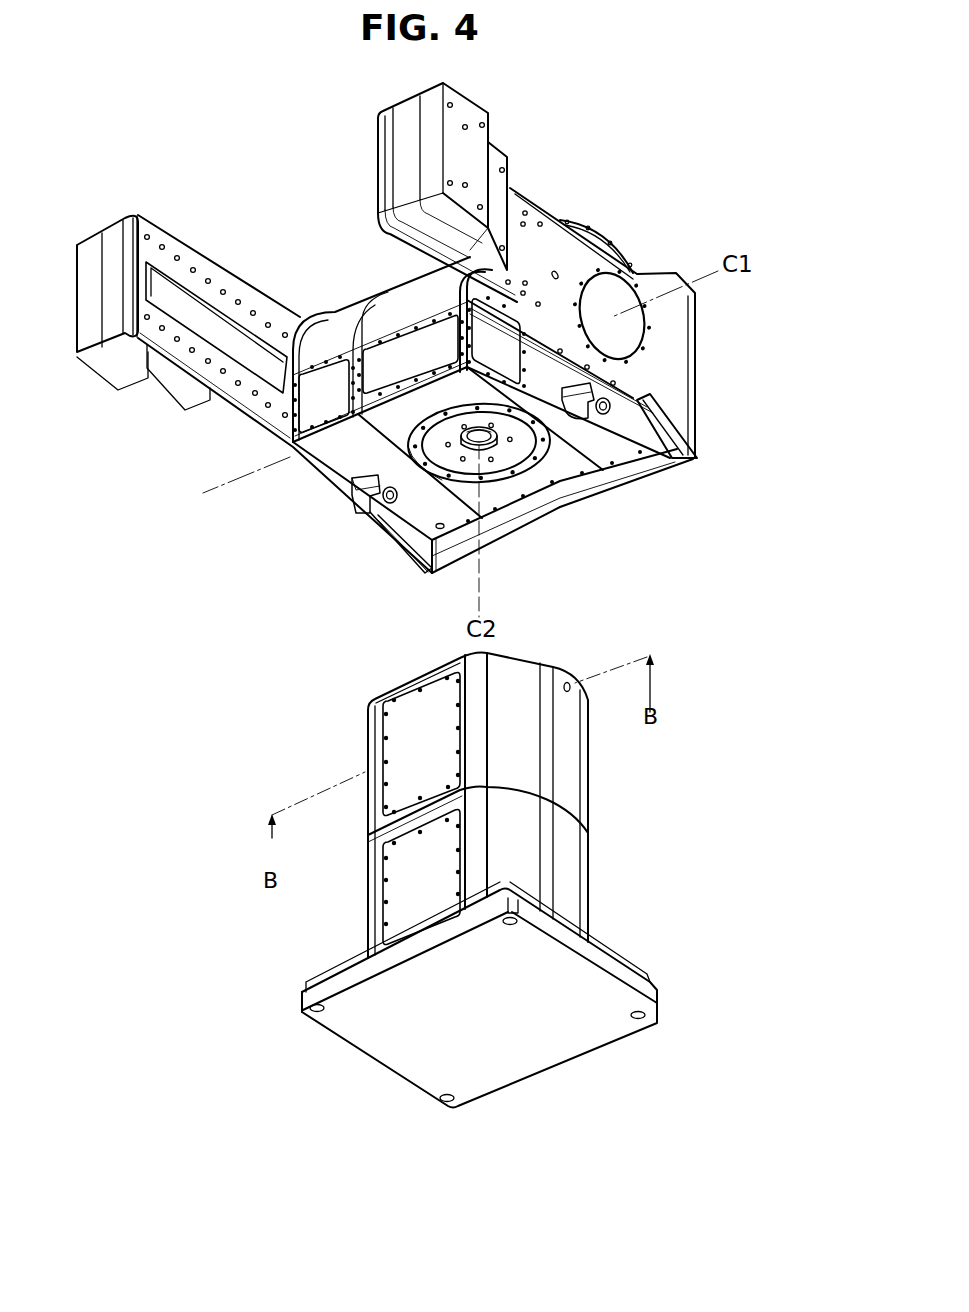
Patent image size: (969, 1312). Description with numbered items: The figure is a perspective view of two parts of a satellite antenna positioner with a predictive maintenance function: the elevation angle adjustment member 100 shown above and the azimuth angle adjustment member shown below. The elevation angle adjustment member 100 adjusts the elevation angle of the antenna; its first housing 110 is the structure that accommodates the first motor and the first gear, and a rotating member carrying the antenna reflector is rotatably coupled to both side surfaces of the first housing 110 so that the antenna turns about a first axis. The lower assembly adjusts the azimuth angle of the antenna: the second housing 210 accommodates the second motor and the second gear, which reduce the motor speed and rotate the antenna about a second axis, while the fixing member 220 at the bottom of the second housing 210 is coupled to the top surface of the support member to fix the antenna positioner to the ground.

The elevation angle adjustment member 100 is at (598, 184).
The first housing 110 is at (337, 310).
The second housing 210 is at (568, 768).
The fixing member 220 is at (628, 965).